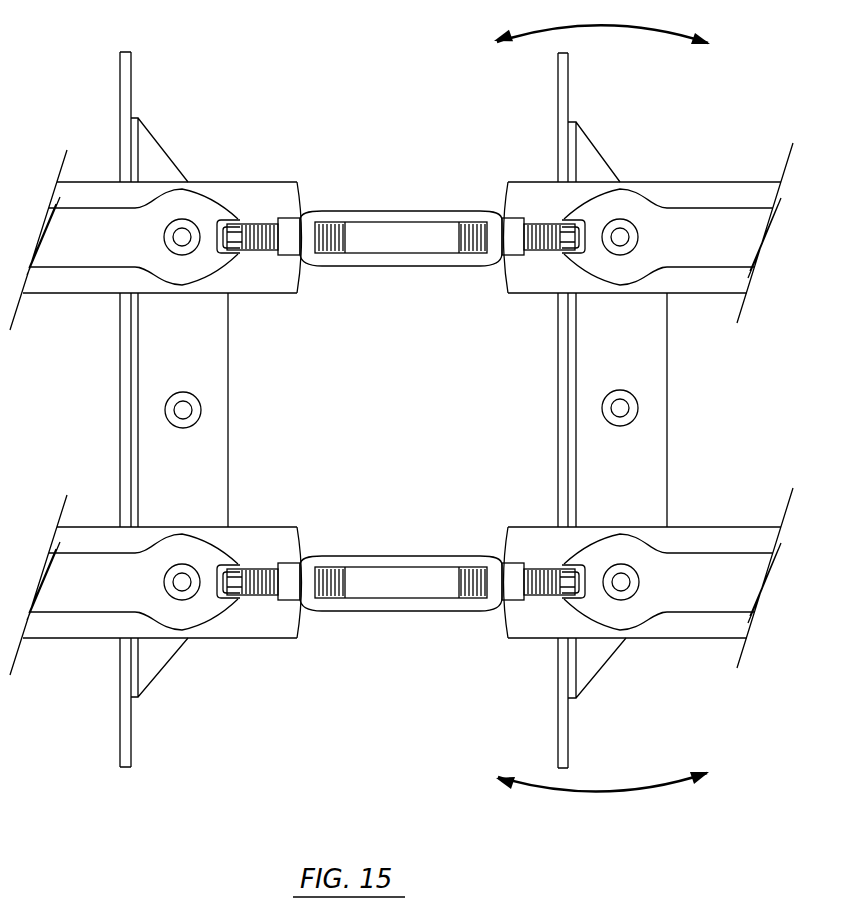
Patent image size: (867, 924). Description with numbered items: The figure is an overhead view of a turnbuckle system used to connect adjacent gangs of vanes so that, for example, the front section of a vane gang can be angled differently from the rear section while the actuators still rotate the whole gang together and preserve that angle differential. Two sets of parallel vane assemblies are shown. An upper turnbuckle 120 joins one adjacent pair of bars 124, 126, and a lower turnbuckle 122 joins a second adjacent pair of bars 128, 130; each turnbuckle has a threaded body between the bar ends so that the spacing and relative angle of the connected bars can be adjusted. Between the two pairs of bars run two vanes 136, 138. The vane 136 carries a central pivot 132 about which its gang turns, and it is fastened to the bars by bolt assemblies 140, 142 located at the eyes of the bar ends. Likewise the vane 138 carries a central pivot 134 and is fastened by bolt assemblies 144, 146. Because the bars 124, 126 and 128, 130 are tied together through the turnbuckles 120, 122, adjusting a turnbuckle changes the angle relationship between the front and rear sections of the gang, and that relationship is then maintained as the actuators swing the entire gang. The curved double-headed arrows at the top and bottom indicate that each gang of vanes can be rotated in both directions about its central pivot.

The turnbuckle 120 is at (355, 211).
The turnbuckle 122 is at (373, 611).
The bar 124 is at (270, 188).
The bar 126 is at (689, 188).
The bar 128 is at (242, 628).
The bar 130 is at (680, 623).
The central pivot 132 is at (183, 410).
The central pivot 134 is at (620, 408).
The vane 136 is at (213, 347).
The vane 138 is at (650, 343).
The bolt assembly 140 is at (182, 237).
The bolt assembly 142 is at (183, 582).
The bolt assembly 144 is at (620, 240).
The bolt assembly 146 is at (621, 582).